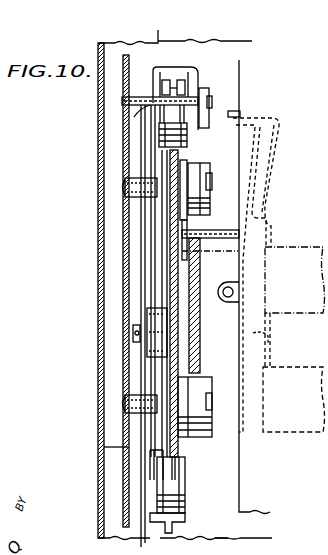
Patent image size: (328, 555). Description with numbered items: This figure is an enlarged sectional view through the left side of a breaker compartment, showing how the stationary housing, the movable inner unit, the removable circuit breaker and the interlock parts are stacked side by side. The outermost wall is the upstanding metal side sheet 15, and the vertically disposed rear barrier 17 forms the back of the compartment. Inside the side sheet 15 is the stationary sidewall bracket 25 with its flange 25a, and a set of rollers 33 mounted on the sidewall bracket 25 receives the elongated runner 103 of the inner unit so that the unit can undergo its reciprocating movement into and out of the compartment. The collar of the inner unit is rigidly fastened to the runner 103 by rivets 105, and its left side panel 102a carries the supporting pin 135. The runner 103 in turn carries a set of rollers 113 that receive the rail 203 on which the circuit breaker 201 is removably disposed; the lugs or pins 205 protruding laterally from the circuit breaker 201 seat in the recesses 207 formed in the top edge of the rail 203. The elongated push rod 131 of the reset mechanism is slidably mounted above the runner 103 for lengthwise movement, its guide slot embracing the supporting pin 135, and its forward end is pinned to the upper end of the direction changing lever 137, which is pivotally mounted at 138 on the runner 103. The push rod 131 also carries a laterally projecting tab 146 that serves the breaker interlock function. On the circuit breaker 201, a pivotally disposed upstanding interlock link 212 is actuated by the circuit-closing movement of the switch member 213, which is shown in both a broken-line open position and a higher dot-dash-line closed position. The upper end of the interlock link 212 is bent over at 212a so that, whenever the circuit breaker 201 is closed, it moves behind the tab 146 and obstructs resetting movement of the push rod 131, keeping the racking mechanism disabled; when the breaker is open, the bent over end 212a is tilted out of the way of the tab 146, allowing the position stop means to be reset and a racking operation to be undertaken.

The side sheet 15 is at (98, 191).
The rear barrier 17 is at (224, 532).
The sidewall bracket 25 is at (157, 293).
The stationary flange 25a is at (168, 524).
The rollers 33 is at (182, 137).
The left side panel 102a is at (104, 447).
The runner 103 is at (123, 257).
The rivets 105 is at (133, 183).
The rollers 113 is at (207, 208).
The push rod 131 is at (192, 67).
The supporting pin 135 is at (134, 114).
The direction changing lever 137 is at (151, 382).
The pivot 138 is at (133, 339).
The tab 146 is at (206, 102).
The circuit breaker 201 is at (262, 512).
The rail 203 is at (200, 340).
The lugs or pins 205 is at (208, 253).
The recesses 207 is at (199, 232).
The interlock link 212 is at (274, 157).
The bent over upper end 212a is at (236, 112).
The switch member 213 is at (299, 432).